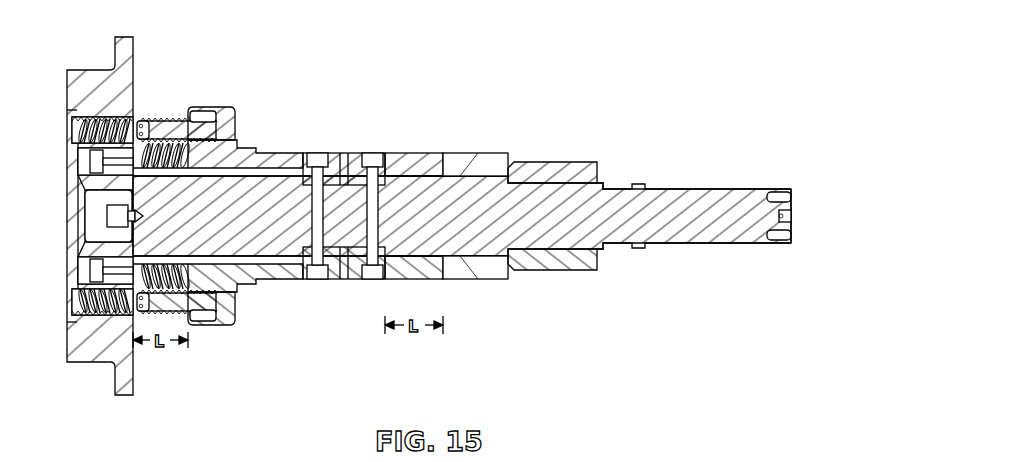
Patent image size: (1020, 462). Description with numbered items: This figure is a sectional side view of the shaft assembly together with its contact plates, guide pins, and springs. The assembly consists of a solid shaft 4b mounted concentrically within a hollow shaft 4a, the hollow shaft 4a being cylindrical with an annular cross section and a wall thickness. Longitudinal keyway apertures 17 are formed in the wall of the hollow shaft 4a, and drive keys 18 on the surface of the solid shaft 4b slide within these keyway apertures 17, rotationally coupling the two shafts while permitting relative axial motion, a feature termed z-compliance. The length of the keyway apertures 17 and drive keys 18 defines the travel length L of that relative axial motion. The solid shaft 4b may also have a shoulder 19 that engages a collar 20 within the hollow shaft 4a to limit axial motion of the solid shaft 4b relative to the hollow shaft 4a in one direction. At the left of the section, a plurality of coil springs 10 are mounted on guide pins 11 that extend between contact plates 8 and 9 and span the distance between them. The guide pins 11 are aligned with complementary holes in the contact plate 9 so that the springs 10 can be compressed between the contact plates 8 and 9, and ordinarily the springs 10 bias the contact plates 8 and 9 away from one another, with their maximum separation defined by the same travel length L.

The hollow shaft 4a is at (530, 272).
The solid shaft 4b is at (660, 243).
The contact plate 8 is at (198, 322).
The contact plate 9 is at (132, 372).
The coil springs 10 is at (148, 117).
The guide pins 11 is at (176, 128).
The keyway apertures 17 is at (402, 162).
The drive keys 18 is at (330, 272).
The shoulder 19 is at (418, 183).
The collar 20 is at (488, 183).